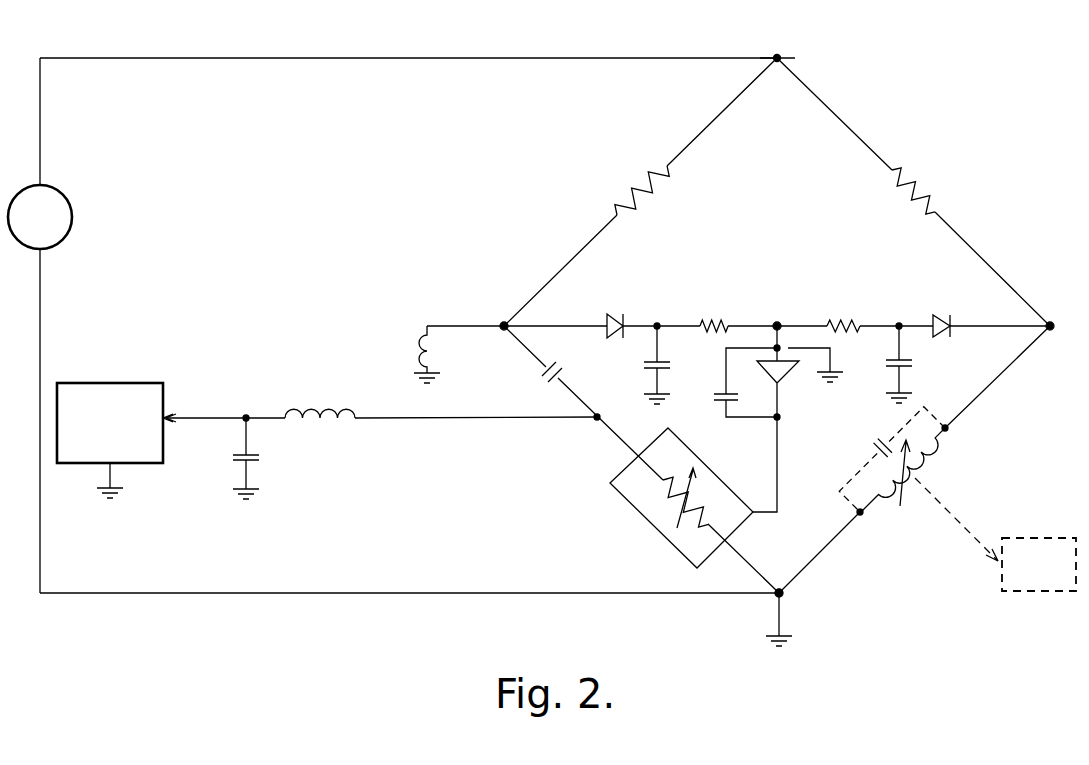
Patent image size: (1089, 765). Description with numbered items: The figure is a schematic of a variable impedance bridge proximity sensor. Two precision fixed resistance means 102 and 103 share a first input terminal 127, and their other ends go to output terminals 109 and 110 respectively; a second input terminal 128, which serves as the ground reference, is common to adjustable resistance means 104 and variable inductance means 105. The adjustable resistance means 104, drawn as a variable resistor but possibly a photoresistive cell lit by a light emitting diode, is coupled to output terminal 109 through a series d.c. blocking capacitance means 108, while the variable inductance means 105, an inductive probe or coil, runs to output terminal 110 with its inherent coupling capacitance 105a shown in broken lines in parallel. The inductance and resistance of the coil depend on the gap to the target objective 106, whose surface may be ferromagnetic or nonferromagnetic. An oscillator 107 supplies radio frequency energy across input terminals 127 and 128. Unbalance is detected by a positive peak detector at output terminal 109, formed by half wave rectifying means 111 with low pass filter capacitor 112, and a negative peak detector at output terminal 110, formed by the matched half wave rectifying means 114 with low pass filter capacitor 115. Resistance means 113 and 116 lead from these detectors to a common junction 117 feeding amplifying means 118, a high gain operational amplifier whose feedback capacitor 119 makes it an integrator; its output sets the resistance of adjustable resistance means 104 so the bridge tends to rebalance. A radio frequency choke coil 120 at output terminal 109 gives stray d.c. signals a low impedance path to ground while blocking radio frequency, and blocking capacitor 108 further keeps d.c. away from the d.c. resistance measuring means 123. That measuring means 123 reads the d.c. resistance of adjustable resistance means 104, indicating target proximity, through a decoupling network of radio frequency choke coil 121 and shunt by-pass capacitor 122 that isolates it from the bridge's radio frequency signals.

The resistance means 102 is at (627, 222).
The resistance means 103 is at (925, 180).
The adjustable resistance means 104 is at (652, 526).
The variable inductance means 105 is at (920, 470).
The coupling capacitance 105a is at (878, 449).
The target objective 106 is at (1022, 592).
The oscillator 107 is at (72, 217).
The d.c. blocking capacitance means 108 is at (542, 369).
The output terminal 109 is at (504, 321).
The output terminal 110 is at (1053, 320).
The half wave rectifying means 111 is at (613, 312).
The low pass filter capacitor 112 is at (644, 366).
The resistance means 113 is at (707, 320).
The half wave rectifying means 114 is at (941, 313).
The low pass filter capacitor 115 is at (910, 366).
The resistance means 116 is at (836, 320).
The junction 117 is at (777, 320).
The amplifying means 118 is at (787, 376).
The feedback capacitor 119 is at (725, 403).
The radio frequency choke coil 120 is at (424, 350).
The radio frequency choke coil 121 is at (320, 412).
The by-pass capacitor 122 is at (255, 463).
The d.c. resistance measuring means 123 is at (85, 383).
The first input terminal 127 is at (777, 52).
The second input terminal 128 is at (784, 594).